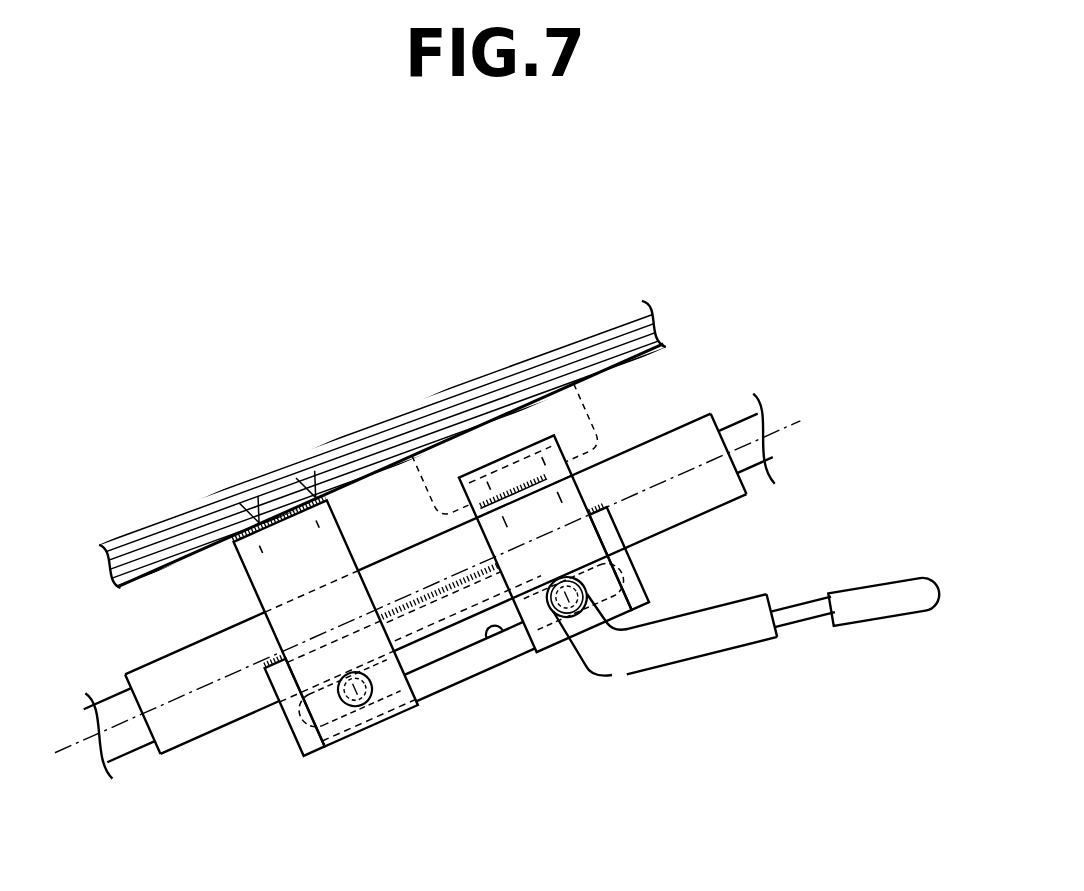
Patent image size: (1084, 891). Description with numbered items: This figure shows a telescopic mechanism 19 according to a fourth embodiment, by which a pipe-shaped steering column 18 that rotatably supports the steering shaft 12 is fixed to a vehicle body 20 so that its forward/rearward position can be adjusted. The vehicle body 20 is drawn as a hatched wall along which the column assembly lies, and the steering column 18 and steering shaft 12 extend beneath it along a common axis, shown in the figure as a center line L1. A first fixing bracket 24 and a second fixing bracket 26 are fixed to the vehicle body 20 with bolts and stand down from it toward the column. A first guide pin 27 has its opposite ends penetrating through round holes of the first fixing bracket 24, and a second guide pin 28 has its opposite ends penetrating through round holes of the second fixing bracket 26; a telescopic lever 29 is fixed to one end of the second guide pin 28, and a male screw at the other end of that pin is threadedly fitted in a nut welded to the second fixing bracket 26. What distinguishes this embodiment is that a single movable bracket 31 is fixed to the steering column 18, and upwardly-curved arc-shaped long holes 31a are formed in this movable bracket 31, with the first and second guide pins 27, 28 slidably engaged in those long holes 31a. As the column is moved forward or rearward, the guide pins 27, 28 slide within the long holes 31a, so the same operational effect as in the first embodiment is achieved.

The steering shaft 12 is at (746, 460).
The steering column 18 is at (194, 730).
The telescopic mechanism 19 is at (560, 676).
The vehicle body 20 is at (198, 520).
The first fixing bracket 24 is at (258, 574).
The second fixing bracket 26 is at (500, 538).
The first guide pin 27 is at (355, 702).
The second guide pin 28 is at (588, 593).
The telescopic lever 29 is at (717, 625).
The movable bracket 31 is at (450, 688).
The long hole 31a is at (486, 637).
The axis line L1 is at (222, 680).